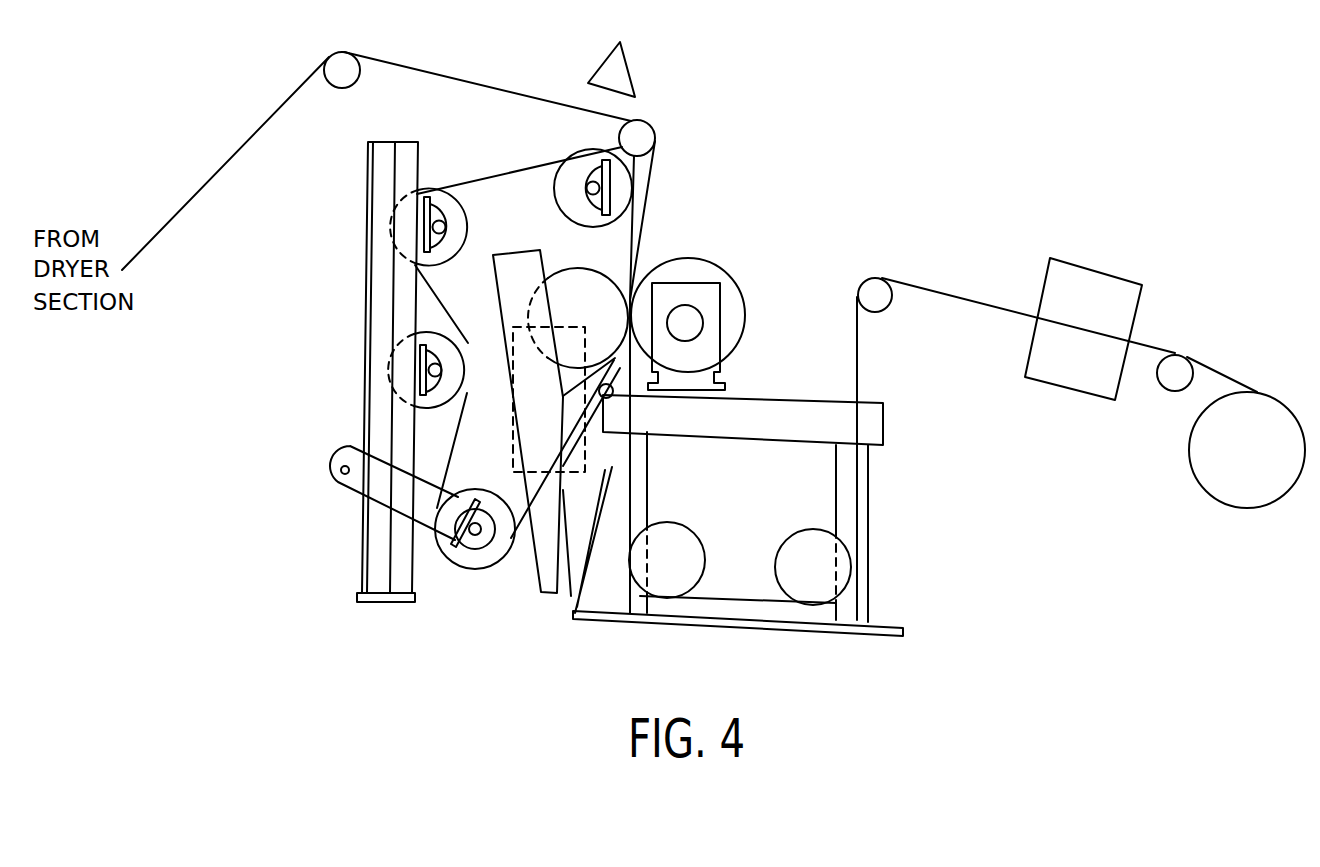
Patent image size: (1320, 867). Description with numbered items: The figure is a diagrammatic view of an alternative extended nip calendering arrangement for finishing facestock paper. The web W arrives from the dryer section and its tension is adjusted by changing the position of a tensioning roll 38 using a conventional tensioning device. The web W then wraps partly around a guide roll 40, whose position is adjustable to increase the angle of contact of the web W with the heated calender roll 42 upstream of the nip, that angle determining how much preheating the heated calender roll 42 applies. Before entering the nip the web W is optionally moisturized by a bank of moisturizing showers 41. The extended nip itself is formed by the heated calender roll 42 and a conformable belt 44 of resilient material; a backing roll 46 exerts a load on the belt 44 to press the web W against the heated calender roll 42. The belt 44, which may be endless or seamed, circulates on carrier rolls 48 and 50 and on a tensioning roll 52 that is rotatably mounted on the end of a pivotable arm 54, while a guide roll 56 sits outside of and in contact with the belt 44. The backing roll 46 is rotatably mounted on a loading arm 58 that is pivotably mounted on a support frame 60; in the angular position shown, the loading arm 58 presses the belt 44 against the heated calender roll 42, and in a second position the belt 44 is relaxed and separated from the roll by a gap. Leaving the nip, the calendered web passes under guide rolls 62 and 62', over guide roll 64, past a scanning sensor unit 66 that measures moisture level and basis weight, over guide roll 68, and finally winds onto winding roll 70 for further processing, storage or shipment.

The web W is at (200, 184).
The tensioning roll 38 is at (360, 83).
The guide roll 40 is at (619, 134).
The bank of moisturizing showers 41 is at (620, 42).
The heated calender roll 42 is at (700, 258).
The conformable belt 44 is at (647, 212).
The backing roll 46 is at (575, 263).
The carrier roll 48 is at (443, 268).
The carrier roll 50 is at (555, 192).
The tensioning roll 52 is at (503, 492).
The pivotable arm 54 is at (419, 533).
The guide roll 56 is at (418, 410).
The loading arm 58 is at (533, 573).
The support frame 60 is at (871, 527).
The guide roll 62 is at (671, 533).
The guide roll 62' is at (811, 538).
The guide roll 64 is at (882, 313).
The scanning sensor unit 66 is at (1100, 263).
The guide roll 68 is at (1175, 395).
The winding roll 70 is at (1213, 500).